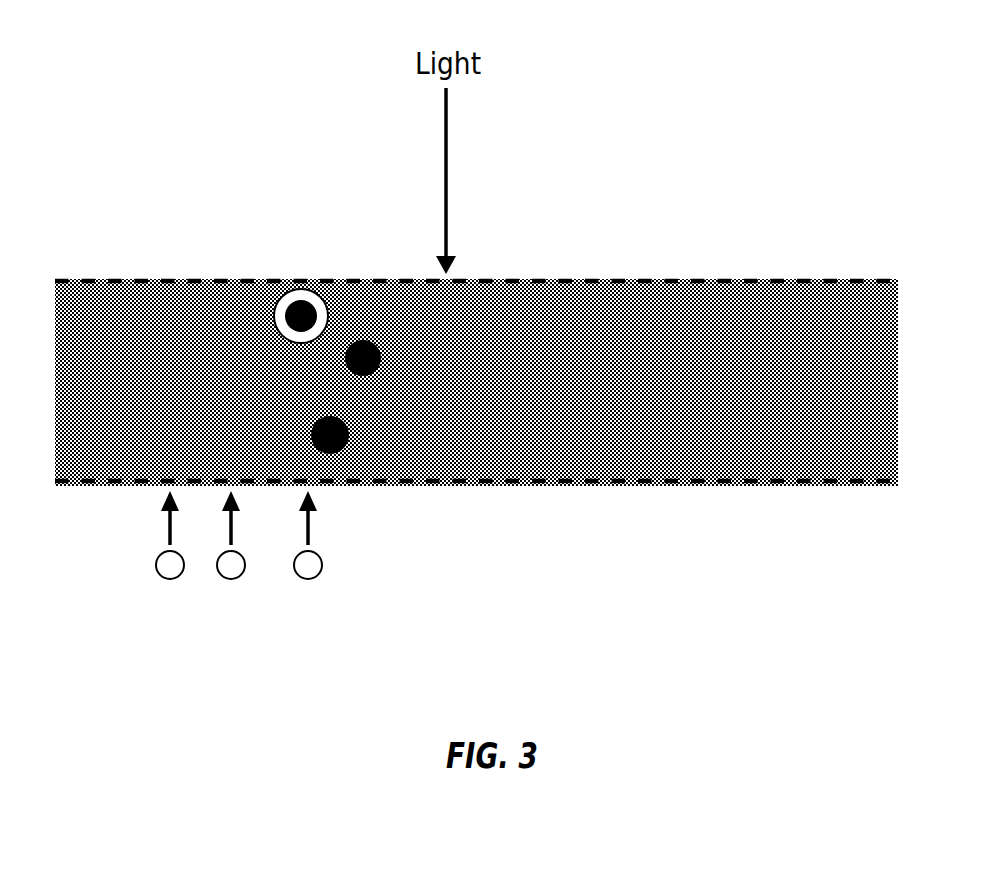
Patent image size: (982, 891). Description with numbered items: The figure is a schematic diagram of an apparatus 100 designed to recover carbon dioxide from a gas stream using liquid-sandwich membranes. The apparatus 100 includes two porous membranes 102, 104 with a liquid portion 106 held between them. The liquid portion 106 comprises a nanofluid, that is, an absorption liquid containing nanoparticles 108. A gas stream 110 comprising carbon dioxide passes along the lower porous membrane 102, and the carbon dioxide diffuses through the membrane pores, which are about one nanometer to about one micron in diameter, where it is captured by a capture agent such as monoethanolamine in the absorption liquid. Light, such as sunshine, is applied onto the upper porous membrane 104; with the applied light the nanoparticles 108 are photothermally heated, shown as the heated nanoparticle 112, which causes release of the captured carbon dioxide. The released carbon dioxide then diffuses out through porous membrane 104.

The apparatus 100 is at (105, 155).
The porous membrane 102 is at (767, 475).
The porous membrane 104 is at (637, 267).
The liquid portion 106 is at (599, 447).
The nanoparticles 108 is at (360, 427).
The gas stream 110 is at (130, 559).
The photothermally heated nanoparticle 112 is at (225, 304).